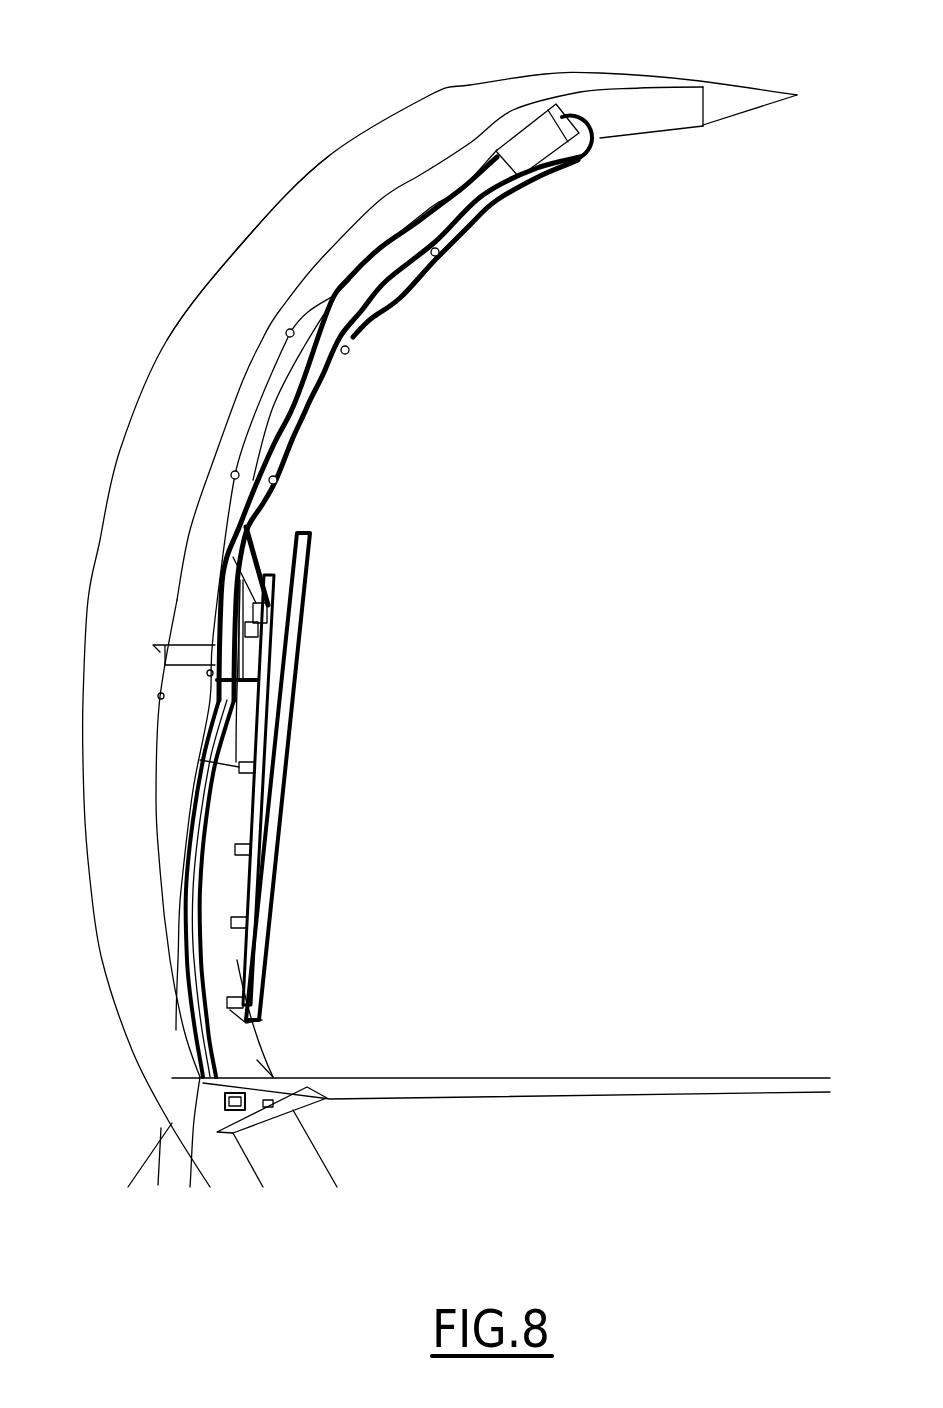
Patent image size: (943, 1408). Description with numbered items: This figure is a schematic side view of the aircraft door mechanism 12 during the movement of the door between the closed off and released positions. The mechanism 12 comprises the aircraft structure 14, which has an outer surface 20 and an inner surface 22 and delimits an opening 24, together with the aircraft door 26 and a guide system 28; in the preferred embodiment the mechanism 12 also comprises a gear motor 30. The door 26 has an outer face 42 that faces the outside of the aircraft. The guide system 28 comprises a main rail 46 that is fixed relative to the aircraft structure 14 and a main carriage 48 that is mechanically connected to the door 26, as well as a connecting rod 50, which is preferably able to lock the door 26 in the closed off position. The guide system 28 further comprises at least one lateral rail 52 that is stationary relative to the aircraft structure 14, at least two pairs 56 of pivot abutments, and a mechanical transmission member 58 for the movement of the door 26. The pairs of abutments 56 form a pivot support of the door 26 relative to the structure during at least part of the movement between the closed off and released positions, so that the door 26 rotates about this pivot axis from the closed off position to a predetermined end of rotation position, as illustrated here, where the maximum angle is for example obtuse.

The aircraft door mechanism 12 is at (356, 52).
The aircraft structure 14 is at (240, 198).
The outer surface 20 is at (180, 305).
The inner surface 22 is at (347, 200).
The opening 24 is at (160, 695).
The aircraft door 26 is at (165, 943).
The guide system 28 is at (428, 335).
The gear motor 30 is at (612, 175).
The outer face 42 is at (183, 845).
The main rail 46 is at (500, 235).
The main carriage 48 is at (280, 526).
The connecting rod 50 is at (275, 648).
The lateral rail 52 is at (296, 896).
The pair of pivot abutments 56 is at (286, 1052).
The mechanical transmission member 58 is at (425, 218).